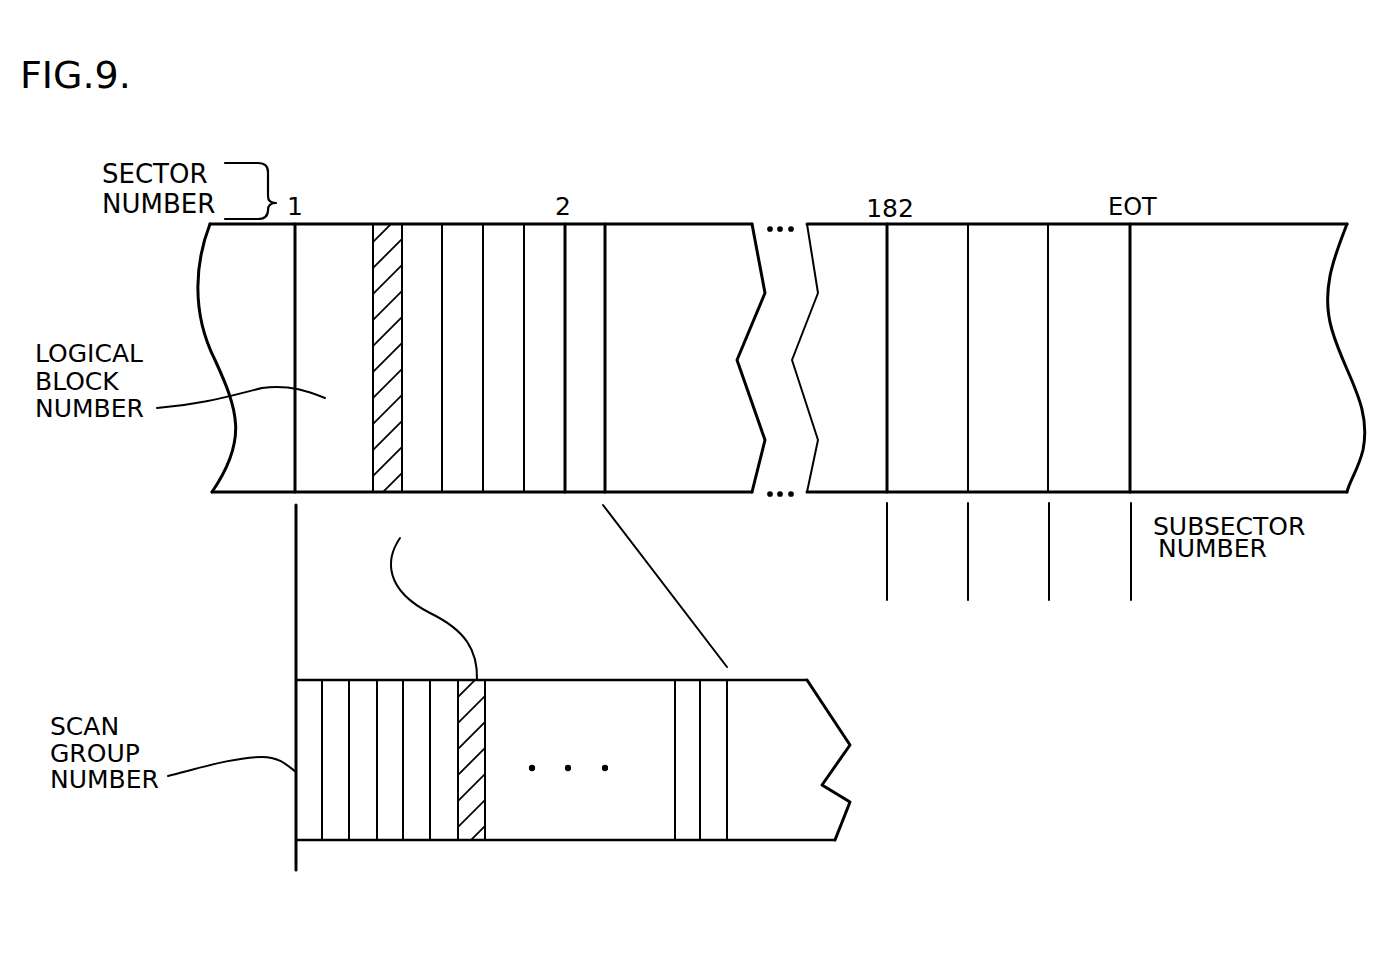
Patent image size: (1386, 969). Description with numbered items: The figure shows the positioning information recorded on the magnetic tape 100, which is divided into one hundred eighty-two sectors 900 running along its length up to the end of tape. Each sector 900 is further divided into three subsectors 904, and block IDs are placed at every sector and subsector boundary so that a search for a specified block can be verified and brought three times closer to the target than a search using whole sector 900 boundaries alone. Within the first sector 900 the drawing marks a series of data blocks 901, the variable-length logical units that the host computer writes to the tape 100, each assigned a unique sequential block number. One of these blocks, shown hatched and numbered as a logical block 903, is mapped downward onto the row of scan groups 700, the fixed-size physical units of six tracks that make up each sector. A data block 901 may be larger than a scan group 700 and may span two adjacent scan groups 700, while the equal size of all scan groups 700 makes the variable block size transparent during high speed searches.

The magnetic tape 100 is at (1020, 207).
The sector 900 is at (293, 188).
The data block 901 is at (540, 227).
The logical block mapped to scan group 903 is at (388, 493).
The subsector 904 is at (947, 483).
The scan group 700 is at (312, 840).